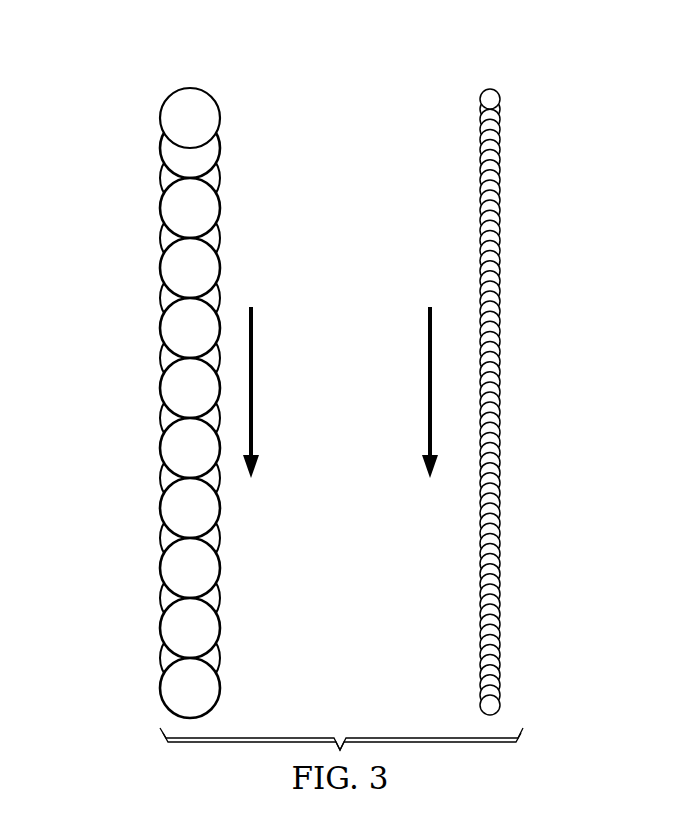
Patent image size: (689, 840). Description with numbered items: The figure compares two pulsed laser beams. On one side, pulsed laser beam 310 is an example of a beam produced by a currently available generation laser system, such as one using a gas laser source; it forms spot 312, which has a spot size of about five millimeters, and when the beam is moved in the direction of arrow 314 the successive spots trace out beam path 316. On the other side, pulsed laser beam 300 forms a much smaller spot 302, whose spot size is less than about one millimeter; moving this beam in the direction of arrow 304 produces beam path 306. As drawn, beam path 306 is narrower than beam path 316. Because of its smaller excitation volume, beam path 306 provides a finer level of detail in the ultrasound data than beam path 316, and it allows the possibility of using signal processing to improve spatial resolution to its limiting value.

The pulsed laser beam 300 is at (526, 71).
The spot 302 is at (487, 88).
The arrow 304 is at (428, 388).
The beam path 306 is at (580, 166).
The pulsed laser beam 310 is at (156, 72).
The spot 312 is at (198, 88).
The arrow 314 is at (253, 388).
The beam path 316 is at (100, 167).